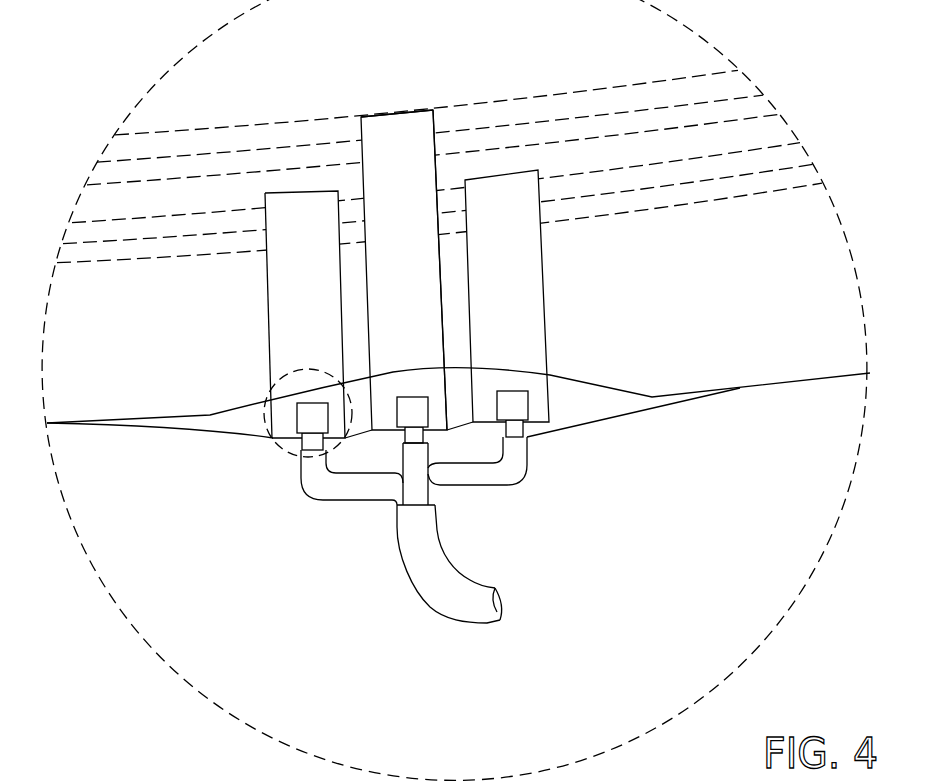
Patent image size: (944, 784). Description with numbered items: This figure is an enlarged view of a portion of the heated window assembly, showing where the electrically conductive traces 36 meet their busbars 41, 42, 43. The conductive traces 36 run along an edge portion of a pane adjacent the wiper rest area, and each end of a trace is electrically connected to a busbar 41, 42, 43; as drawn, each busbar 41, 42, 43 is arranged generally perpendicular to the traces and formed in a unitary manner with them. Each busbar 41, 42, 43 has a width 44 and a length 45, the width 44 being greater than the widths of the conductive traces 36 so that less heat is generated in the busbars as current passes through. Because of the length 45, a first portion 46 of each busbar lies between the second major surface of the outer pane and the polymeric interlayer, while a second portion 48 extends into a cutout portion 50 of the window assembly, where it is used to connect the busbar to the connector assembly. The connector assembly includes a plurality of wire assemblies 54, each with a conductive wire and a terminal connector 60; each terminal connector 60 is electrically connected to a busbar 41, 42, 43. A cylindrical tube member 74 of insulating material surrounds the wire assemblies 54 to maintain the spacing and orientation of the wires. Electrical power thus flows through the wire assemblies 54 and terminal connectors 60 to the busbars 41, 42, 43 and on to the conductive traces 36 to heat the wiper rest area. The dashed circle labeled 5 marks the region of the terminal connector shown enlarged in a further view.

The conductive traces 36 is at (237, 123).
The busbar 41 is at (278, 335).
The busbar 42 is at (430, 218).
The busbar 43 is at (540, 328).
The width 44 is at (399, 113).
The length 45 is at (440, 180).
The first portion 46 is at (273, 314).
The second portion 48 is at (293, 403).
The cutout portion 50 is at (190, 427).
The wire assemblies 54 is at (368, 493).
The terminal connector 60 is at (528, 395).
The cylindrical tube member 74 is at (487, 627).
The detail region of FIG. 5 is at (270, 438).